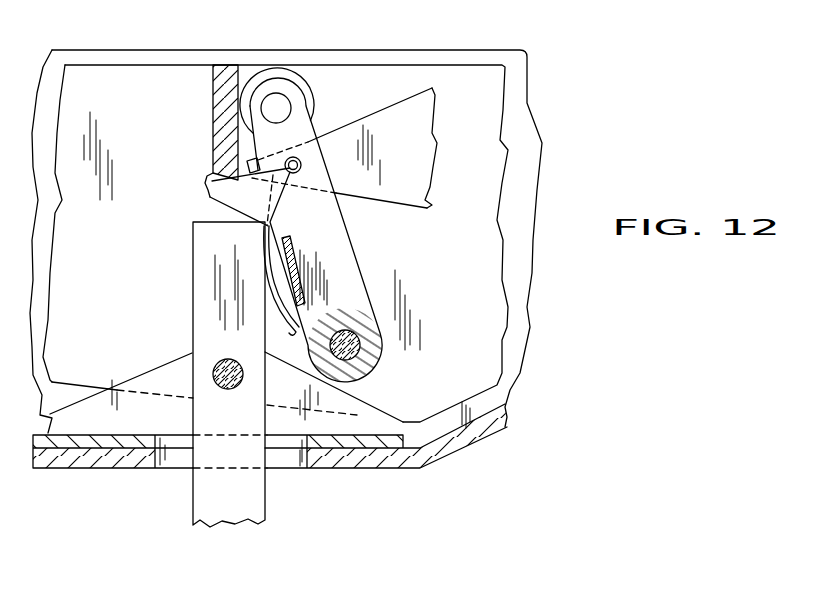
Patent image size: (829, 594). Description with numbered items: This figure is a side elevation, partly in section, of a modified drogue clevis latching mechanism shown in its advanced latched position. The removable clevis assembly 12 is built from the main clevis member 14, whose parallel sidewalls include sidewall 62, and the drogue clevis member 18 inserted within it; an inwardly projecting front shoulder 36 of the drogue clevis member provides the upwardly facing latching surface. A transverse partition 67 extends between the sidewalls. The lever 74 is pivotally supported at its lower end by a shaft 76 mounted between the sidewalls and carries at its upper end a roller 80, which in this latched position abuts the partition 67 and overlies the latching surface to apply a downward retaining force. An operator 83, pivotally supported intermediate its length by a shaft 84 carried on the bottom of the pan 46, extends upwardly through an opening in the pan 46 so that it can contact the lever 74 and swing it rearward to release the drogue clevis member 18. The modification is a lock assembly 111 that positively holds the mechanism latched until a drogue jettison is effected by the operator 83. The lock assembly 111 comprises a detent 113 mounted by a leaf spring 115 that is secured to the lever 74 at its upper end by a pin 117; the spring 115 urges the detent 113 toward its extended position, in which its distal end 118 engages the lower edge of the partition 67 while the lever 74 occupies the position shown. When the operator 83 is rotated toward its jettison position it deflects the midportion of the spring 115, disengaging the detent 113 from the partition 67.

The removable clevis assembly 12 is at (412, 88).
The main clevis member 14 is at (147, 60).
The drogue clevis member 18 is at (418, 162).
The front shoulder 36 is at (248, 160).
The pan 46 is at (460, 445).
The sidewall 62 is at (153, 302).
The transverse partition 67 is at (212, 80).
The lever 74 is at (352, 242).
The shaft 76 is at (353, 352).
The roller 80 is at (302, 68).
The operator 83 is at (265, 507).
The shaft 84 is at (224, 390).
The lock assembly 111 is at (196, 186).
The detent 113 is at (230, 196).
The leaf spring 115 is at (282, 303).
The pin 117 is at (301, 165).
The distal end 118 is at (208, 176).